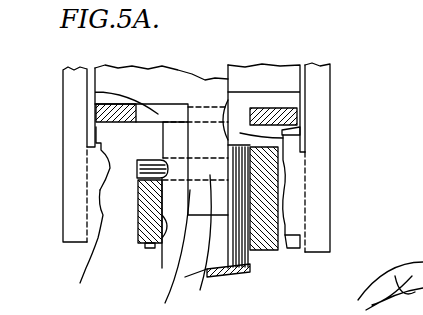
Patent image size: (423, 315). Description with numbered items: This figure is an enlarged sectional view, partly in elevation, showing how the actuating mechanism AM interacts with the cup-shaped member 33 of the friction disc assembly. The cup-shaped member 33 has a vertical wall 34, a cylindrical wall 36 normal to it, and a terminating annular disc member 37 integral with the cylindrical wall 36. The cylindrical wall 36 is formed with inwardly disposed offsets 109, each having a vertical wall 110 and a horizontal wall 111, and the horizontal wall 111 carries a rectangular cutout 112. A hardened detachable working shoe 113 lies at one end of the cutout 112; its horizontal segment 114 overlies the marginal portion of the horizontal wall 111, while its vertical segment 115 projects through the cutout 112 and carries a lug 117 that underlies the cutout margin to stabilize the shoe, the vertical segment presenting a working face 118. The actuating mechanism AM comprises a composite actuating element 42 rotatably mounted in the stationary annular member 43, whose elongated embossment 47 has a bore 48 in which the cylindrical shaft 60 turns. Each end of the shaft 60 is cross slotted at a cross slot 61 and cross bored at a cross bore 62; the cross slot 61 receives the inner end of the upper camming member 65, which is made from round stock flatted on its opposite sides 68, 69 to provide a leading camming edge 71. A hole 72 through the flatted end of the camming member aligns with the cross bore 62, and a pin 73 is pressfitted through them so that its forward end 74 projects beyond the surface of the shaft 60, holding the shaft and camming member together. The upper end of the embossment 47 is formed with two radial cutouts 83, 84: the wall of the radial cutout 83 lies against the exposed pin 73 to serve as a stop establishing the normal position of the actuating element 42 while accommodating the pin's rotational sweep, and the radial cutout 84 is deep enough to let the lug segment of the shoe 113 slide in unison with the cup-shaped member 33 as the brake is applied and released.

The inwardly disposed offset 109 is at (117, 75).
The rectangular cutout 112 is at (87, 93).
The horizontal wall 111 is at (95, 119).
The flatted side 68 is at (186, 122).
The radial cutout 83 is at (146, 141).
The pin 73 is at (146, 165).
The terminating annular disc member 37 is at (72, 208).
The forward end of pin 74 is at (187, 170).
The leading camming edge 71 is at (138, 223).
The cylindrical wall 36 is at (337, 253).
The bore 48 is at (150, 247).
The elongated embossment 47 is at (152, 254).
The cross slot 61 is at (166, 252).
The hole 72 is at (197, 242).
The flatted side 69 is at (240, 273).
The cylindrical shaft 60 is at (249, 258).
The actuating mechanism AM is at (256, 276).
The upper camming member 65 is at (213, 80).
The composite actuating element 42 is at (230, 67).
The horizontal segment 114 is at (237, 115).
The vertical segment 115 is at (250, 117).
The vertical wall 110 is at (289, 89).
The working shoe 113 is at (303, 110).
The cup-shaped member 33 is at (341, 98).
The lug 117 is at (285, 143).
The radial cutout 84 is at (300, 133).
The cross bore 62 is at (233, 185).
The vertical wall 34 is at (318, 190).
The working face 118 is at (233, 222).
The stationary annular member 43 is at (296, 233).